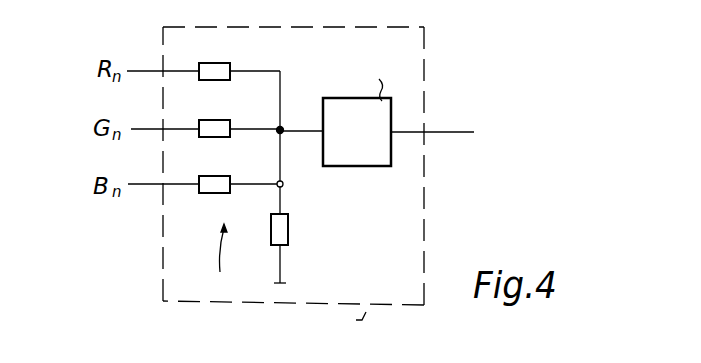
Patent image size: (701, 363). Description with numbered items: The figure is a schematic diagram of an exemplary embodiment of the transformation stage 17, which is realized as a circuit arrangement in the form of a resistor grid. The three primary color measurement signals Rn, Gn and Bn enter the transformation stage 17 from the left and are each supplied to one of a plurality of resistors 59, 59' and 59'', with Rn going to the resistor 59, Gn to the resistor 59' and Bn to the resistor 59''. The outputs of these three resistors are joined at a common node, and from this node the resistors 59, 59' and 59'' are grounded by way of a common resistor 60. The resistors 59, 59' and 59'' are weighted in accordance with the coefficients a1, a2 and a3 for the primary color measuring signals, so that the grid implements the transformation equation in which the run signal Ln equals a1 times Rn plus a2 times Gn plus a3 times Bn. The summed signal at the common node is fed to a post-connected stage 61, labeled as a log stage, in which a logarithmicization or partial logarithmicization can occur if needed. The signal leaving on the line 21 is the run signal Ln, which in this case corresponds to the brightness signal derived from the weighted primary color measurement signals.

The resistor 59 is at (235, 57).
The resistor 59' is at (235, 112).
The resistor 59'' is at (238, 168).
The common resistor 60 is at (279, 238).
The post-connected stage 61 is at (368, 152).
The line 21 is at (449, 134).
The transformation stage 17 is at (176, 266).
The coefficient a1 is at (204, 98).
The coefficient a2 is at (204, 156).
The coefficient a3 is at (204, 209).